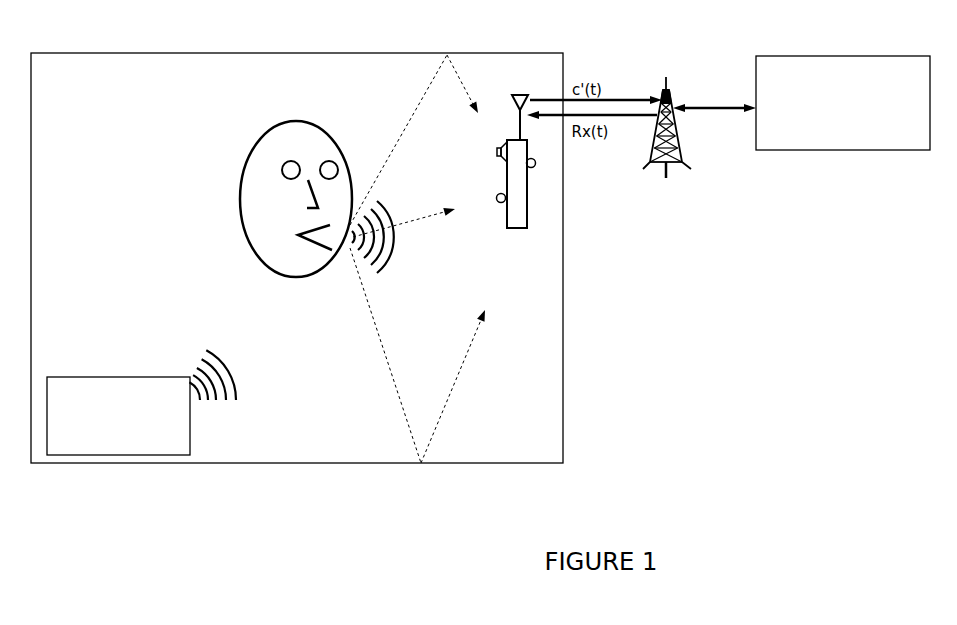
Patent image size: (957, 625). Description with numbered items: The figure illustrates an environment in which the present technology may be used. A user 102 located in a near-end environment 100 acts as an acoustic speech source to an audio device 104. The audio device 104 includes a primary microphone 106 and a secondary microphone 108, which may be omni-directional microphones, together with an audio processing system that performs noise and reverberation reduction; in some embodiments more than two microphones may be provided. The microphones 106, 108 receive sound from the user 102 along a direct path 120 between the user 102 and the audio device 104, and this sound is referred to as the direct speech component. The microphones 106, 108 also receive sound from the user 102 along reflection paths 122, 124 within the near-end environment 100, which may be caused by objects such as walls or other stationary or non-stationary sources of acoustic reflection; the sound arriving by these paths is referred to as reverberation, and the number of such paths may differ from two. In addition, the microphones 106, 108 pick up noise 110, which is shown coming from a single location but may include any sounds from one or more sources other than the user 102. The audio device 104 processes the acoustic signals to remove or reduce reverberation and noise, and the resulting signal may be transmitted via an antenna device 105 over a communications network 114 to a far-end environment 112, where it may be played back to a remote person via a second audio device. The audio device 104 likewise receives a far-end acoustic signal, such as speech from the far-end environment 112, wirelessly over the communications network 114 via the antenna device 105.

The near-end environment 100 is at (101, 119).
The user 102 is at (296, 183).
The audio device 104 is at (517, 228).
The antenna device 105 is at (520, 93).
The primary microphone 106 is at (500, 204).
The secondary microphone 108 is at (533, 168).
The noise 110 is at (105, 433).
The far-end environment 112 is at (829, 123).
The communications network 114 is at (666, 182).
The direct path 120 is at (413, 228).
The reflection path 122 is at (453, 388).
The reflection path 124 is at (461, 82).